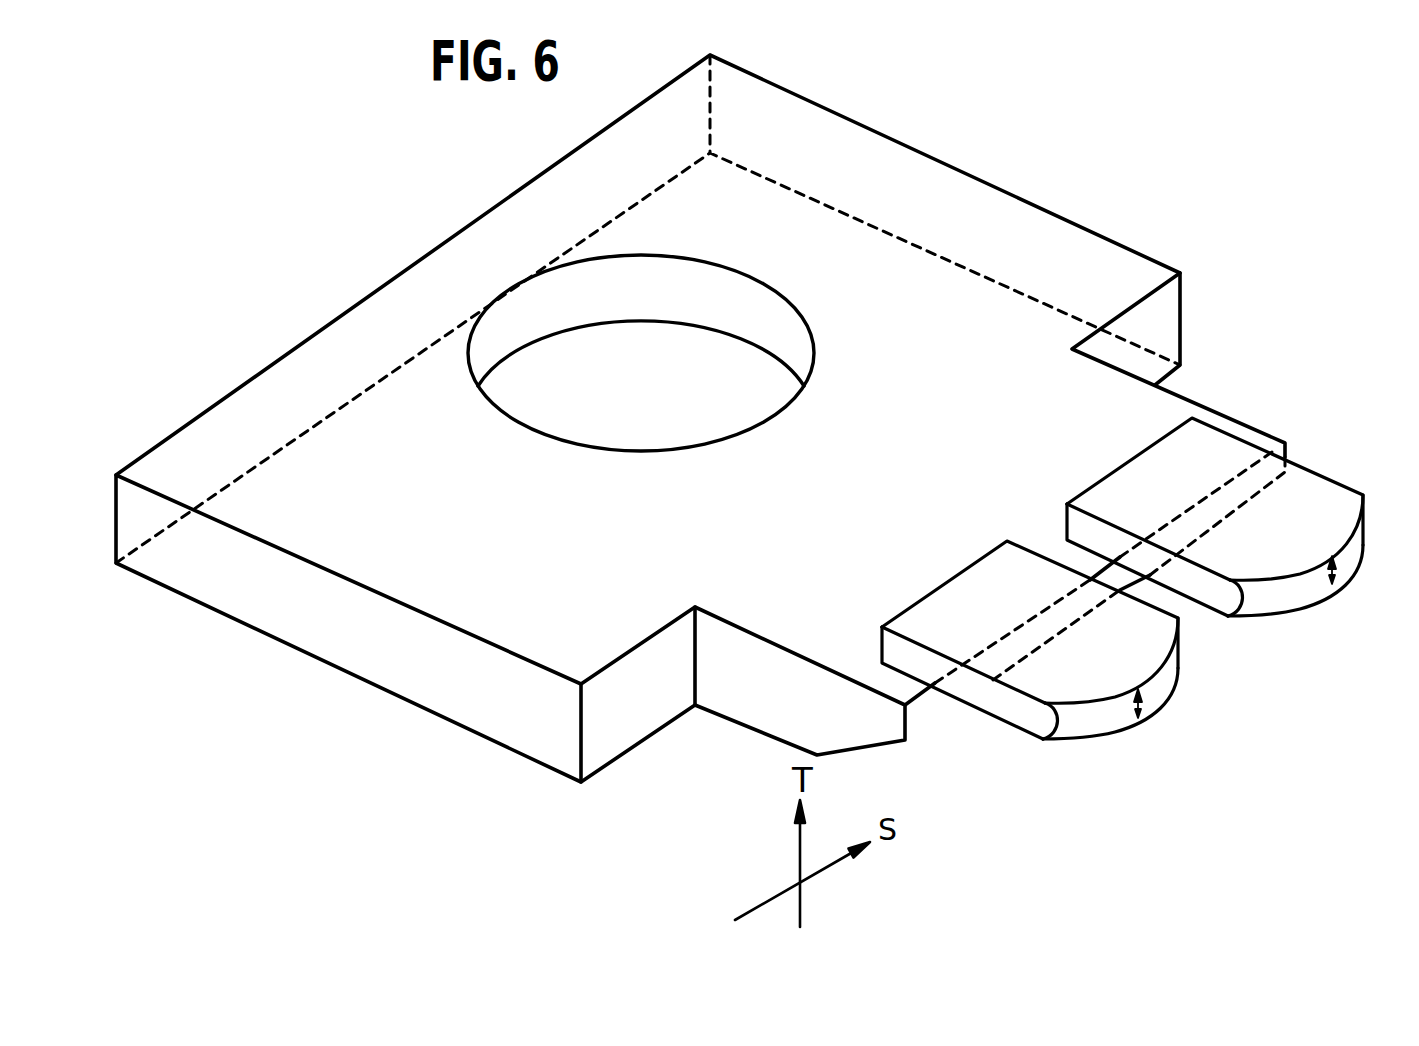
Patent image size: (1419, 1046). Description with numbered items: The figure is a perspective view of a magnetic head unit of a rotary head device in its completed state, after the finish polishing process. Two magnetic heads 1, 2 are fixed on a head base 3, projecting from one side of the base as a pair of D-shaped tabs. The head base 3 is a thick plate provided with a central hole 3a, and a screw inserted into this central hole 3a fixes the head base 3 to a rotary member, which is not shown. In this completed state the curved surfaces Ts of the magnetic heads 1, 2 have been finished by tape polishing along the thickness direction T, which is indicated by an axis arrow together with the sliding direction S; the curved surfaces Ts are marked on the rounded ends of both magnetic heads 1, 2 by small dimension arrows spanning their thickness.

The magnetic head 1 is at (1140, 716).
The magnetic head 2 is at (1348, 554).
The head base 3 is at (1003, 188).
The central hole 3a is at (728, 287).
The curved surfaces Ts is at (1138, 708).